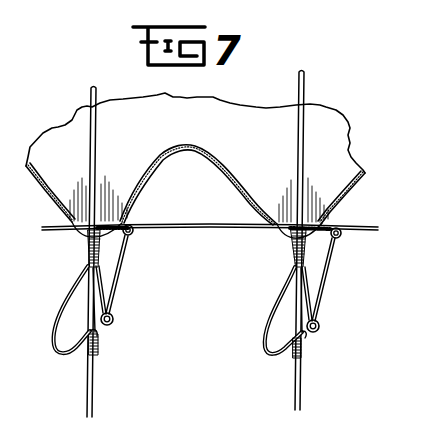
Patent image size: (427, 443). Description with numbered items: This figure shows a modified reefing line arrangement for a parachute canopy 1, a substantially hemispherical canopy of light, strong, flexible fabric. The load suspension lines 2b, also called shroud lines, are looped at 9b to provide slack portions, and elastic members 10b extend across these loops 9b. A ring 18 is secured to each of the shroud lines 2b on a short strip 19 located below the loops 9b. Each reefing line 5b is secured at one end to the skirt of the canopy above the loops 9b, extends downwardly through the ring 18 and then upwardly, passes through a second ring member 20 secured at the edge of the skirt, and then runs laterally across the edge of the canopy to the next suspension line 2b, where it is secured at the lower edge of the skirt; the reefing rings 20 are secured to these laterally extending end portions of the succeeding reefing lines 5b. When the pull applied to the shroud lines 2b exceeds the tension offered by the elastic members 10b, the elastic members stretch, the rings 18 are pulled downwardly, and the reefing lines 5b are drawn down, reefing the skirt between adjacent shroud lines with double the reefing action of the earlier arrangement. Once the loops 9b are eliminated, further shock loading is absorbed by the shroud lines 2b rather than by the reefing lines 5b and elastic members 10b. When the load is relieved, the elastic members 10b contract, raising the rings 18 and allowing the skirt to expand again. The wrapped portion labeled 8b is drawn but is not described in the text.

The parachute canopy 1 is at (234, 152).
The suspension lines 2b is at (97, 143).
The reefing lines 5b is at (118, 278).
The binding wrap 8b is at (98, 355).
The loops 9b is at (54, 333).
The elastic members 10b is at (80, 294).
The ring 18 is at (114, 318).
The short strip 19 is at (110, 340).
The second ring member 20 is at (133, 225).